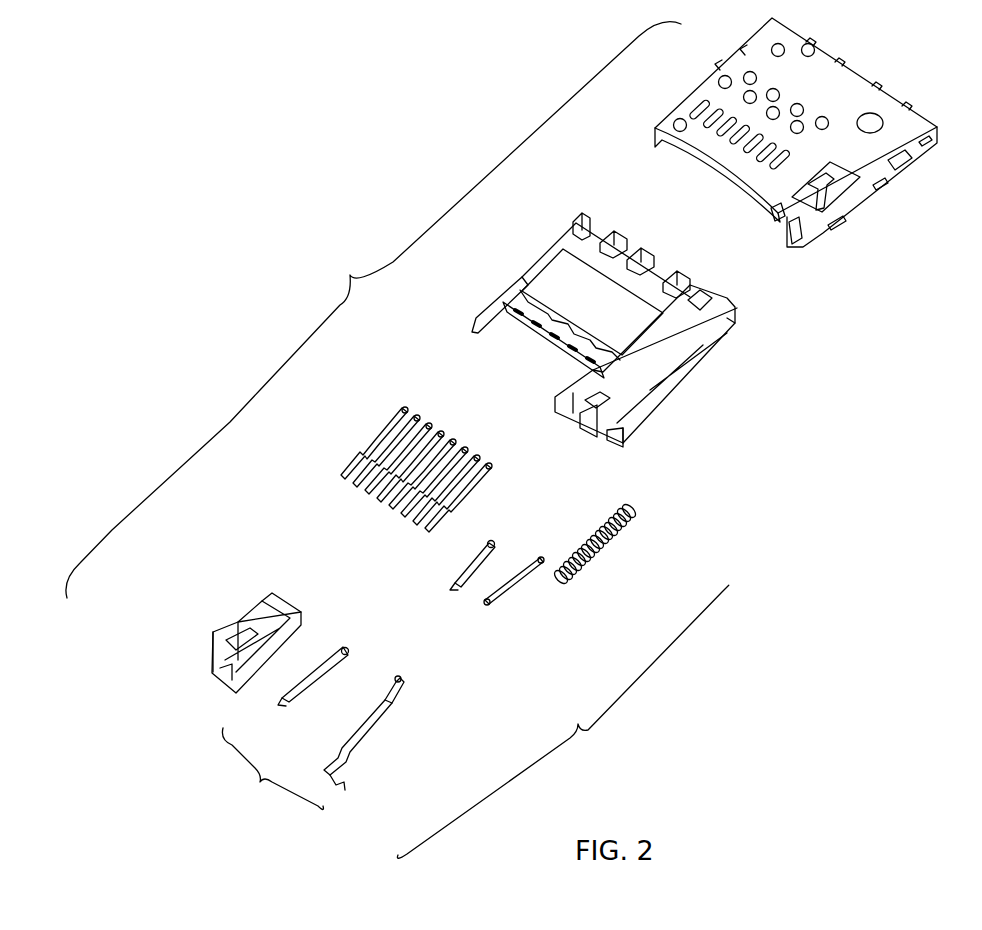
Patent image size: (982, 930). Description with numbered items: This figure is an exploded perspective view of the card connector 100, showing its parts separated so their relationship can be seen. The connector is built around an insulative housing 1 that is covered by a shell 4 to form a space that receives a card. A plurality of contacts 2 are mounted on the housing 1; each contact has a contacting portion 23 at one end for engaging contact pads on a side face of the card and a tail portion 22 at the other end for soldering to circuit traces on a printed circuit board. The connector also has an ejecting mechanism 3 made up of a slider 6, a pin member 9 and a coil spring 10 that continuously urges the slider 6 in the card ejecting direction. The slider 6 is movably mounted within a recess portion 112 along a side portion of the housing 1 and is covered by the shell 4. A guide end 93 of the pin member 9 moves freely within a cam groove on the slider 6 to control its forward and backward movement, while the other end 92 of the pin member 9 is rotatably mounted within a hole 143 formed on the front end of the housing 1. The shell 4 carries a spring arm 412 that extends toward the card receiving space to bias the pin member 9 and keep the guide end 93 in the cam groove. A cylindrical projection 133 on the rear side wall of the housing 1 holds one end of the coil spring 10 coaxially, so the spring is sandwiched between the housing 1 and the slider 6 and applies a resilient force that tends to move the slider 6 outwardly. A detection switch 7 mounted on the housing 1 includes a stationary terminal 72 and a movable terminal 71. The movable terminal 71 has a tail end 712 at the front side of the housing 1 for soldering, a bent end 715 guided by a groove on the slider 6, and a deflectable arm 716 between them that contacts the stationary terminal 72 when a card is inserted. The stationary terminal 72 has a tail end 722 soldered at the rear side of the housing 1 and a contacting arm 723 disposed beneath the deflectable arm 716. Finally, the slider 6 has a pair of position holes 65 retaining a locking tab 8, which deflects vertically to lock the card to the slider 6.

The card connector 100 is at (373, 310).
The insulative housing 1 is at (612, 360).
The recess portion 112 is at (643, 383).
The cylindrical projection 133 is at (691, 312).
The hole 143 is at (591, 413).
The contacts 2 is at (363, 451).
The tail portion 22 is at (343, 482).
The contacting portion 23 is at (400, 408).
The ejecting mechanism 3 is at (562, 721).
The shell 4 is at (800, 162).
The spring arm 412 is at (820, 195).
The slider 6 is at (208, 630).
The position holes 65 is at (245, 628).
The detection switch 7 is at (272, 769).
The movable terminal 71 is at (402, 739).
The tail end 712 is at (340, 780).
The bent end 715 is at (400, 680).
The deflectable arm 716 is at (398, 694).
The stationary terminal 72 is at (330, 663).
The tail end 722 is at (348, 652).
The contacting arm 723 is at (287, 690).
The locking tab 8 is at (455, 563).
The pin member 9 is at (553, 636).
The other end 92 is at (486, 604).
The guide end 93 is at (541, 562).
The coil spring 10 is at (611, 560).